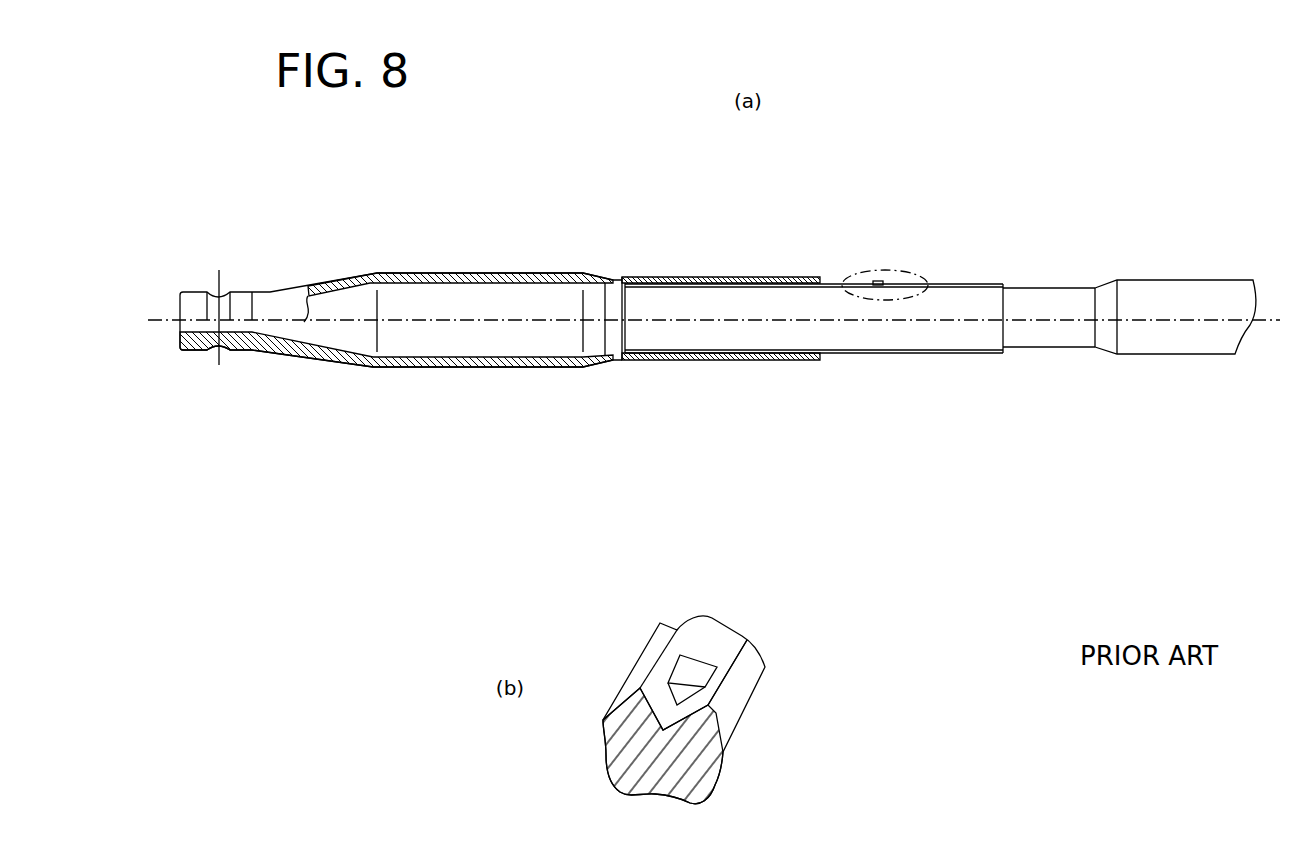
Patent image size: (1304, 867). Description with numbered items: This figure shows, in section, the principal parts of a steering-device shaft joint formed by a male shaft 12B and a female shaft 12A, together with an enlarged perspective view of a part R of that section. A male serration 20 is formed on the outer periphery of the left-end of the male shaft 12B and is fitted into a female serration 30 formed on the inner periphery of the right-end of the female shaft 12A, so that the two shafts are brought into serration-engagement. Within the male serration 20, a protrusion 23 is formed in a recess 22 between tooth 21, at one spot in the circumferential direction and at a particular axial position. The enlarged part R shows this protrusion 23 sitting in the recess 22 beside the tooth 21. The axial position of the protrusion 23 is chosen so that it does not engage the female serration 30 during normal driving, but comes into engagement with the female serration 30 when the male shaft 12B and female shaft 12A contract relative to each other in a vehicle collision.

The female shaft 12A is at (498, 275).
The male shaft 12B is at (1155, 290).
The male serration 20 is at (921, 353).
The tooth 21 is at (645, 670).
The recess 22 is at (718, 626).
The protrusion 23 is at (878, 281).
The female serration 30 is at (681, 291).
The part R is at (905, 268).